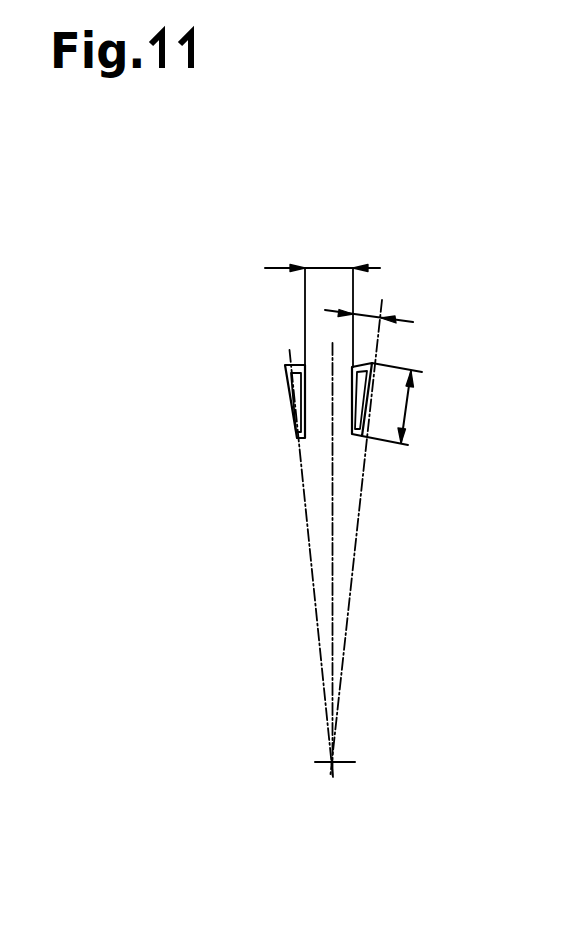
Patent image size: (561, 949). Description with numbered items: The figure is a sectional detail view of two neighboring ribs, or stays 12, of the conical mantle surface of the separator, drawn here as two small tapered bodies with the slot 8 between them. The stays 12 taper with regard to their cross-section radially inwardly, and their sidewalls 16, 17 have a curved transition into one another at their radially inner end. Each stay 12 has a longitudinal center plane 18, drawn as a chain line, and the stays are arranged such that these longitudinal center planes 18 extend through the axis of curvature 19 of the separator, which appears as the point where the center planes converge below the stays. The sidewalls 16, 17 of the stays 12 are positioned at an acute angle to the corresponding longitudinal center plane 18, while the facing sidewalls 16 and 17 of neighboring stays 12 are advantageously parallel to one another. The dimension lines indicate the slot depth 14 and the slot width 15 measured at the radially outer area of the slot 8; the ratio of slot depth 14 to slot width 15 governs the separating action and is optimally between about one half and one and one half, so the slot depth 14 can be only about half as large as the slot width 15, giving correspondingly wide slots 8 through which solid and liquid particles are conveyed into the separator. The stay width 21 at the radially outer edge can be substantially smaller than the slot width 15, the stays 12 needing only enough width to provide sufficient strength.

The slot 8 is at (284, 454).
The stay 12 is at (303, 438).
The slot depth 14 is at (410, 408).
The slot width 15 is at (330, 264).
The sidewall 16 is at (315, 376).
The sidewall 17 is at (293, 404).
The longitudinal center plane 18 is at (310, 538).
The axis of curvature 19 is at (327, 768).
The stay width 21 is at (368, 320).